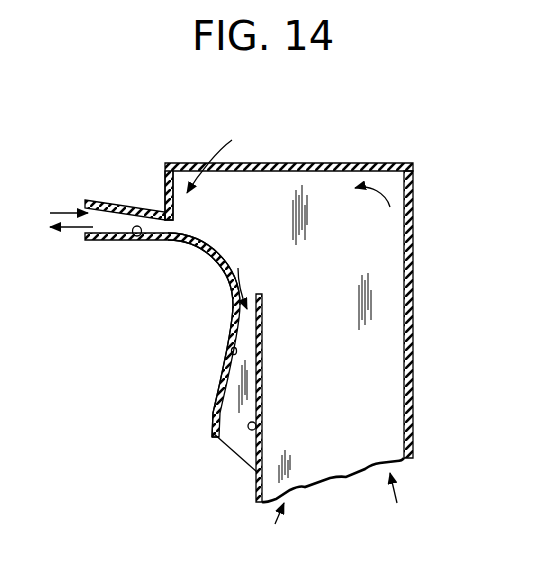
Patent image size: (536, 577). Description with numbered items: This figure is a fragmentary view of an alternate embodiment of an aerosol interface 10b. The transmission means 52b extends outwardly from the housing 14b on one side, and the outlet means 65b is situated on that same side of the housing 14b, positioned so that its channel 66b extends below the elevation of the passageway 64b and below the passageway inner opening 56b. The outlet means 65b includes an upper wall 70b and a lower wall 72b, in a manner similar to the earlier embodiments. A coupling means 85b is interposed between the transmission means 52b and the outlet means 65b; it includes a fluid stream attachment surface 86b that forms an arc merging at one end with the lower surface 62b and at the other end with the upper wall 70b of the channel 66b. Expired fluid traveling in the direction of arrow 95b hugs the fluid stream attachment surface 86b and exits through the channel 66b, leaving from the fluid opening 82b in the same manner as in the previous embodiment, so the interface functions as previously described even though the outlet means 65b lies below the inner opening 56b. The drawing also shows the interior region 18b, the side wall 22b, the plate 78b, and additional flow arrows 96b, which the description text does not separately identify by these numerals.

The aerosol interface 10b is at (315, 297).
The housing 14b is at (190, 160).
The chamber 18b is at (352, 402).
The side wall 22b is at (413, 386).
The transmission means 52b is at (176, 340).
The passageway inner opening 56b is at (166, 221).
The lower surface 62b is at (138, 240).
The passageway 64b is at (114, 212).
The outlet means 65b is at (214, 392).
The channel 66b is at (230, 417).
The upper wall 70b is at (229, 357).
The lower wall 72b is at (256, 427).
The baffle plate 78b is at (287, 396).
The fluid opening 82b is at (235, 461).
The coupling means 85b is at (214, 269).
The fluid stream attachment surface 86b is at (213, 251).
The arrow indicating direction of expired fluid 95b is at (60, 212).
The fluid flow arrow 96b is at (72, 232).